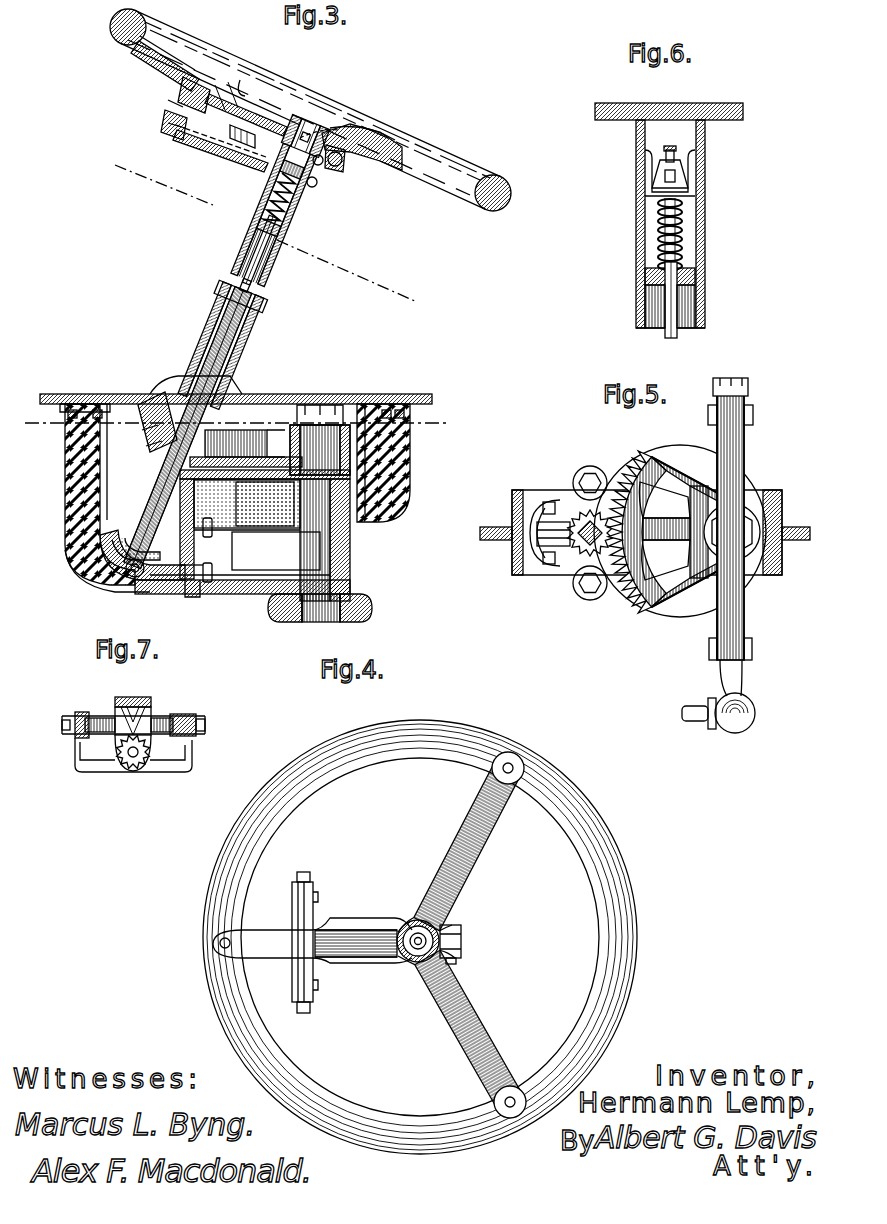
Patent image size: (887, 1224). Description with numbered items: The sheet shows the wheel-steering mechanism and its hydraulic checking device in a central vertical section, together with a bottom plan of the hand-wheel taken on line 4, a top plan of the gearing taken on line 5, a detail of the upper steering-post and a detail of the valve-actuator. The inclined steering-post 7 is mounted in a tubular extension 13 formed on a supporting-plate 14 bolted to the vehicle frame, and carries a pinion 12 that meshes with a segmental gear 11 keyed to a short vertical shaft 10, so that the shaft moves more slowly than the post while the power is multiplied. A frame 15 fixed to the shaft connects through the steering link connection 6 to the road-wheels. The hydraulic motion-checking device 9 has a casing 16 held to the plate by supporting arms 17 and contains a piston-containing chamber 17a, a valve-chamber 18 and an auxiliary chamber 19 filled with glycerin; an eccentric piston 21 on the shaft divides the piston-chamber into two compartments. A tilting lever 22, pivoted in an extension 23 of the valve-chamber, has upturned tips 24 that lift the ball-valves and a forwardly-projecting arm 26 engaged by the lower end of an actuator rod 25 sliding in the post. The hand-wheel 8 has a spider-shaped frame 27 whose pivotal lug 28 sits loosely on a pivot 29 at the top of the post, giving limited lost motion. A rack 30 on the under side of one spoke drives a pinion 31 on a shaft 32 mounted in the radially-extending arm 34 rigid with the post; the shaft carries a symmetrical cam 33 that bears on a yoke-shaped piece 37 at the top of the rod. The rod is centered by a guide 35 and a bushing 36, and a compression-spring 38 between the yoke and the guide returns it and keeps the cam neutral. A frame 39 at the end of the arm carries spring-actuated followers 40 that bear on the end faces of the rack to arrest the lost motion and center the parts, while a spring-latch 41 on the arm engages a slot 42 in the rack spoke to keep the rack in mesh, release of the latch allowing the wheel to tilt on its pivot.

In FIG. 3, the section line 4 4 is at (267, 235).
In FIG. 3, the section line 5 5 is at (236, 423).
In FIG. 3, the steering link connection 6 is at (308, 135).
In FIG. 5, the steering link connection 6 is at (697, 718).
In FIG. 3, the steering-post 7 is at (279, 265).
In FIG. 4, the steering-post 7 is at (406, 920).
In FIG. 6, the steering-post 7 is at (706, 298).
In FIG. 3, the hand-wheel 8 is at (452, 162).
In FIG. 4, the hand-wheel 8 is at (613, 858).
In FIG. 3, the hydraulic motion-checking device 9 is at (62, 555).
In FIG. 3, the vertical shaft 10 is at (345, 587).
In FIG. 3, the segmental gear 11 is at (255, 462).
In FIG. 5, the segmental gear 11 is at (663, 600).
In FIG. 3, the pinion 12 is at (140, 408).
In FIG. 5, the pinion 12 is at (573, 560).
In FIG. 3, the tubular extension 13 is at (200, 330).
In FIG. 4, the tubular extension 13 is at (408, 960).
In FIG. 3, the supporting-plate 14 is at (92, 395).
In FIG. 3, the frame 15 is at (362, 612).
In FIG. 5, the frame 15 is at (739, 622).
In FIG. 3, the casing 16 is at (248, 594).
In FIG. 5, the casing 16 is at (687, 617).
In FIG. 3, the supporting arms 17 is at (68, 472).
In FIG. 5, the supporting arms 17 is at (488, 532).
In FIG. 3, the piston-containing chamber 17a is at (120, 578).
In FIG. 3, the valve-chamber 18 is at (228, 554).
In FIG. 3, the auxiliary chamber 19 is at (185, 503).
In FIG. 3, the piston 21 is at (299, 554).
In FIG. 3, the tilting lever 22 is at (160, 570).
In FIG. 3, the extension of the valve-chamber 23 is at (137, 578).
In FIG. 3, the upturned tips 24 is at (190, 597).
In FIG. 3, the actuator rod 25 is at (256, 244).
In FIG. 6, the actuator rod 25 is at (668, 318).
In FIG. 3, the forwardly-projecting arm 26 is at (95, 585).
In FIG. 3, the spider-shaped frame 27 is at (360, 140).
In FIG. 7, the spider-shaped frame 27 is at (142, 697).
In FIG. 4, the spider-shaped frame 27 is at (480, 873).
In FIG. 3, the pivotal lug 28 is at (322, 170).
In FIG. 4, the pivotal lug 28 is at (463, 940).
In FIG. 3, the pivot 29 is at (340, 168).
In FIG. 4, the pivot 29 is at (458, 960).
In FIG. 3, the rack 30 is at (183, 92).
In FIG. 7, the rack 30 is at (124, 712).
In FIG. 3, the pinion 31 is at (165, 117).
In FIG. 7, the pinion 31 is at (133, 770).
In FIG. 3, the shaft 32 is at (238, 147).
In FIG. 7, the shaft 32 is at (147, 766).
In FIG. 3, the cam 33 is at (298, 190).
In FIG. 6, the cam 33 is at (690, 183).
In FIG. 3, the radially-extending arm 34 is at (210, 140).
In FIG. 4, the radially-extending arm 34 is at (358, 948).
In FIG. 3, the guide 35 is at (278, 235).
In FIG. 6, the guide 35 is at (692, 275).
In FIG. 3, the bushing 36 is at (193, 358).
In FIG. 3, the yoke-shaped piece 37 is at (266, 176).
In FIG. 6, the yoke-shaped piece 37 is at (648, 165).
In FIG. 3, the compression-spring 38 is at (248, 222).
In FIG. 6, the compression-spring 38 is at (655, 240).
In FIG. 7, the frame 39 is at (180, 765).
In FIG. 4, the frame 39 is at (313, 899).
In FIG. 7, the spring-actuated followers 40 is at (180, 714).
In FIG. 3, the spring-latch 41 is at (242, 90).
In FIG. 3, the slot 42 is at (252, 108).